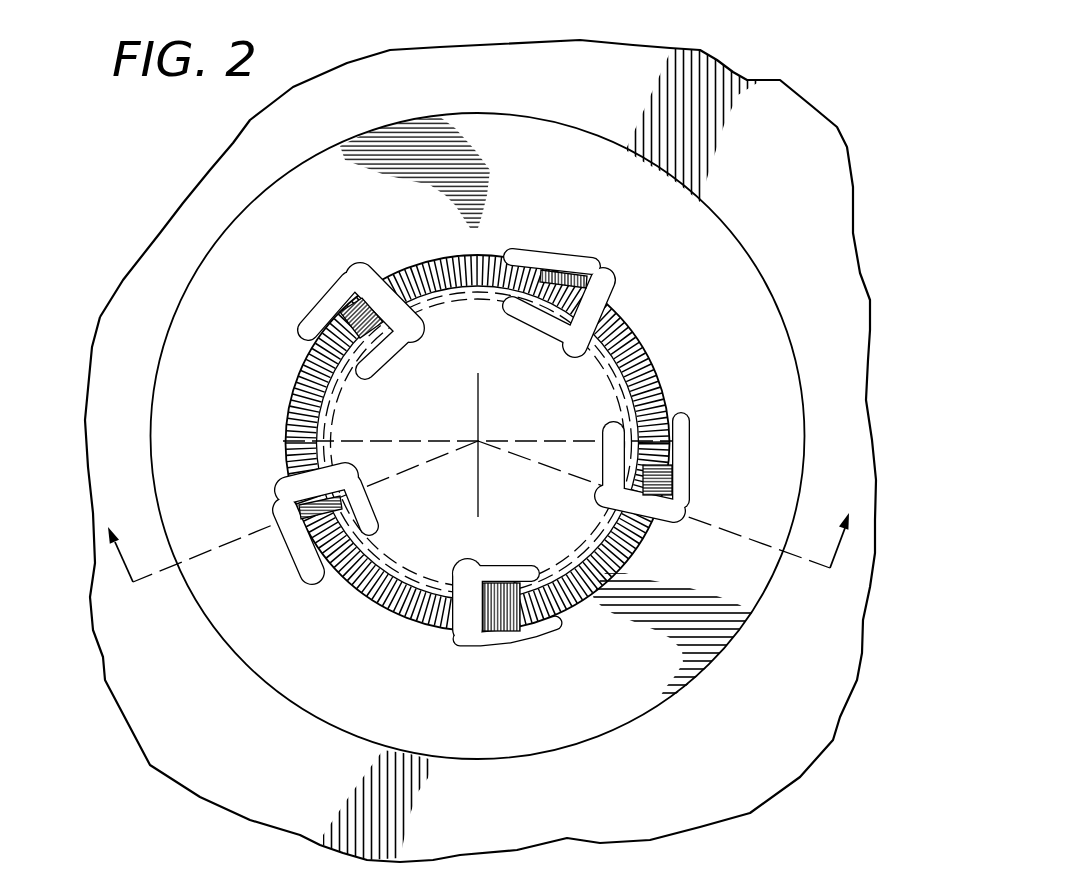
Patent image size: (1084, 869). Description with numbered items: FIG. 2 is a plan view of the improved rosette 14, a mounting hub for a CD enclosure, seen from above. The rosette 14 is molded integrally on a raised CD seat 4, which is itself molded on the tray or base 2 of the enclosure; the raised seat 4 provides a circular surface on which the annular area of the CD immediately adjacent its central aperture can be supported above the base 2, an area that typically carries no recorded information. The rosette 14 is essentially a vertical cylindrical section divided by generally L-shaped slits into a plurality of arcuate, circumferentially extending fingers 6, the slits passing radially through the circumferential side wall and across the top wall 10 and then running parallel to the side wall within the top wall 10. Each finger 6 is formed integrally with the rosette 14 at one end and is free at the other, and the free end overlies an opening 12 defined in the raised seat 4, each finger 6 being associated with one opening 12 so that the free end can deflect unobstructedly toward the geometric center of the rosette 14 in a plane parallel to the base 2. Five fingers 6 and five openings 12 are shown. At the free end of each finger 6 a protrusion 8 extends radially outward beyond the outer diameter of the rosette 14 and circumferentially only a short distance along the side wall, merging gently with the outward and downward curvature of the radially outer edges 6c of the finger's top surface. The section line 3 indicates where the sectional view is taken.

The tray or base 2 is at (735, 775).
The section line 3- 3 is at (480, 511).
The raised CD seat 4 is at (280, 707).
The finger 6 is at (310, 564).
The radially outer edges 6c is at (495, 856).
The protrusion 8 is at (284, 540).
The top wall 10 is at (452, 403).
The opening 12 is at (296, 330).
The rosette 14 is at (278, 434).